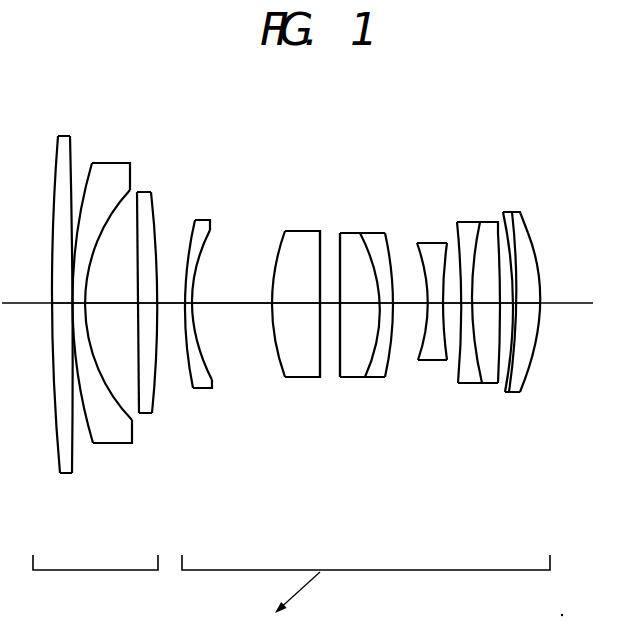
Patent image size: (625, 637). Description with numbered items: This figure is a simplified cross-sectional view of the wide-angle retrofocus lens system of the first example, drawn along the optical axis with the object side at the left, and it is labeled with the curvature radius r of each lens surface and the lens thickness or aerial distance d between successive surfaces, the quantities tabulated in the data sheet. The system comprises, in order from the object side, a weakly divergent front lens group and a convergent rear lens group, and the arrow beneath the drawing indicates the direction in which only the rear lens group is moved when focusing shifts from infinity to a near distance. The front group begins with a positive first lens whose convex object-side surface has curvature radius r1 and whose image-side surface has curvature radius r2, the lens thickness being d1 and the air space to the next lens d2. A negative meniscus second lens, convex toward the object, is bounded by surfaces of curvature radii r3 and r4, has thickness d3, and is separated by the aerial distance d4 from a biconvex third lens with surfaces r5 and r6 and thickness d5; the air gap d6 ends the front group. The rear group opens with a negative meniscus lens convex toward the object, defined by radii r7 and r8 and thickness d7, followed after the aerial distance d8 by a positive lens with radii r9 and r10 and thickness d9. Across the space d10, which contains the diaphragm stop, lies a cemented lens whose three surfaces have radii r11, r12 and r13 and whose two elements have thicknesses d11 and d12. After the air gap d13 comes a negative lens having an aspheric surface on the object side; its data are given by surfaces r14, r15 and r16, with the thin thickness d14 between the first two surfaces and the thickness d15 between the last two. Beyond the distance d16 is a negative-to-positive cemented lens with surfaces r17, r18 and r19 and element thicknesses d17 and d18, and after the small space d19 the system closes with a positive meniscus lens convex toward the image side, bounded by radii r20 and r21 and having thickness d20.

The curvature radius of first lens surface r1 is at (58, 137).
The curvature radius of second lens surface r2 is at (70, 137).
The curvature radius of third lens surface r3 is at (86, 165).
The curvature radius of fourth lens surface r4 is at (130, 163).
The curvature radius of fifth lens surface r5 is at (137, 192).
The curvature radius of sixth lens surface r6 is at (154, 205).
The curvature radius of seventh lens surface r7 is at (192, 218).
The curvature radius of eighth lens surface r8 is at (211, 220).
The curvature radius of ninth lens surface r9 is at (280, 242).
The curvature radius of tenth lens surface r10 is at (321, 236).
The curvature radius of eleventh lens surface r11 is at (339, 240).
The curvature radius of twelfth lens surface r12 is at (358, 232).
The curvature radius of thirteenth lens surface r13 is at (385, 232).
The curvature radius of fourteenth lens surface r14 is at (420, 258).
The curvature radius of fifteenth lens surface r15 is at (447, 255).
The curvature radius of sixteenth lens surface r16 is at (458, 235).
The curvature radius of seventeenth lens surface r17 is at (480, 222).
The curvature radius of eighteenth lens surface r18 is at (498, 222).
The curvature radius of nineteenth lens surface r19 is at (503, 212).
The curvature radius of twentieth lens surface r20 is at (511, 212).
The curvature radius of twenty-first lens surface r21 is at (528, 233).
The thickness of first lens d1 is at (56, 305).
The aerial distance between first and second lenses d2 is at (72, 305).
The thickness of second lens d3 is at (79, 305).
The aerial distance between second and third lenses d4 is at (110, 305).
The thickness of third lens d5 is at (145, 305).
The aerial distance between front and rear lens groups d6 is at (167, 305).
The thickness of rear-group negative meniscus lens d7 is at (188, 305).
The aerial distance between negative meniscus lens and positive lens d8 is at (225, 305).
The thickness of positive lens d9 is at (305, 305).
The aerial distance between positive lens and cemented lens d10 is at (324, 305).
The thickness of first element of cemented lens d11 is at (360, 305).
The thickness of second element of cemented lens d12 is at (386, 305).
The aerial distance between cemented lens and aspheric negative lens d13 is at (410, 305).
The thickness of aspheric object-side layer of negative lens d14 is at (436, 305).
The thickness of negative lens element d15 is at (452, 305).
The aerial distance between aspheric negative lens and second cemented lens d16 is at (466, 305).
The thickness of negative element of second cemented lens d17 is at (486, 305).
The thickness of positive element of second cemented lens d18 is at (506, 305).
The aerial distance between second cemented lens and positive meniscus lens d19 is at (517, 305).
The thickness of positive meniscus lens d20 is at (528, 305).